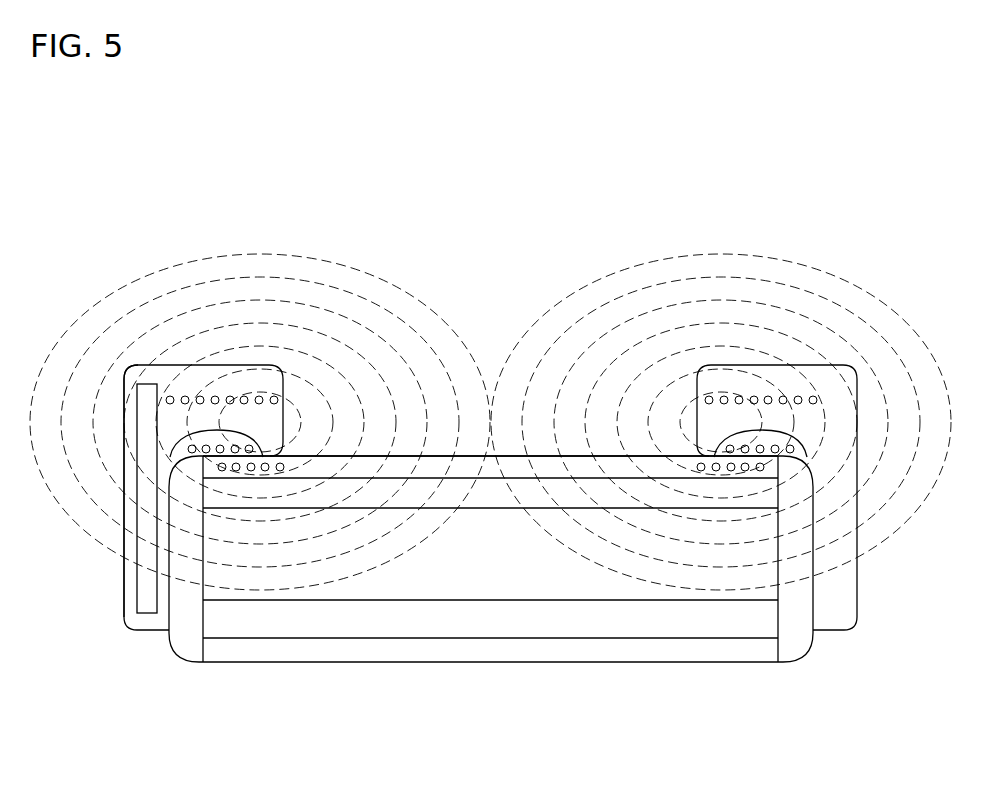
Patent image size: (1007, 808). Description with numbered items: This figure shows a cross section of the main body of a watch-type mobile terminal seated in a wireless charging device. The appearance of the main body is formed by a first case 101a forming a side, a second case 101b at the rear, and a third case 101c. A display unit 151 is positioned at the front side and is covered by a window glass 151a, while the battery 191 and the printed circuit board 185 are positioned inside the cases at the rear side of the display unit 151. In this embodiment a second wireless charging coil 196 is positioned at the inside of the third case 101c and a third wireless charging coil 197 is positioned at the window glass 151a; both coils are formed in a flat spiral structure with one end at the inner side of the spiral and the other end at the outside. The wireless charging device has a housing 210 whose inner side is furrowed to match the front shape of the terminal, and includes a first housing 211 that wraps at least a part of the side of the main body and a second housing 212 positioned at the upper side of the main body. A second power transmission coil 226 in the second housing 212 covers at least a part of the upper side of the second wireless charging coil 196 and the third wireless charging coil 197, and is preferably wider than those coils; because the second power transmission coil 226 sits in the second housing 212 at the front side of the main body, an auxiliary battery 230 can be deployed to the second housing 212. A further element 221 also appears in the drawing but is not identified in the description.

The first case 101a is at (798, 645).
The second case 101b is at (697, 650).
The third case 101c is at (783, 433).
The display unit 151 is at (503, 488).
The window glass 151a is at (428, 467).
The printed circuit board 185 is at (552, 622).
The battery 191 is at (577, 527).
The second wireless charging coil 196 is at (253, 448).
The third wireless charging coil 197 is at (282, 467).
The housing 210 is at (153, 632).
The first housing 211 is at (843, 498).
The second housing 212 is at (812, 365).
The housing of first auxiliary device 221 is at (158, 512).
The second power transmission coil 226 is at (199, 396).
The auxiliary battery 230 is at (140, 452).